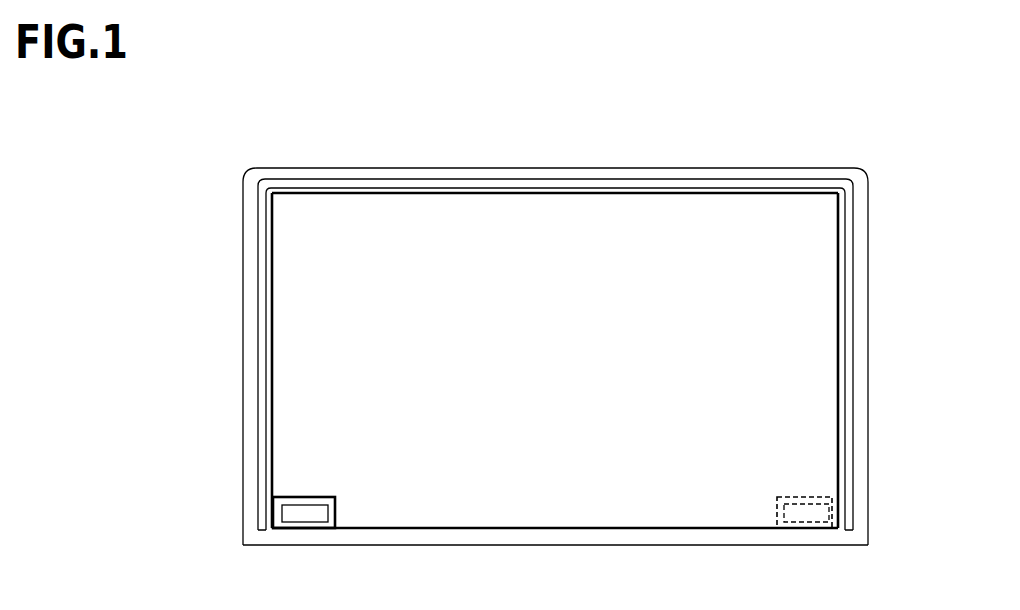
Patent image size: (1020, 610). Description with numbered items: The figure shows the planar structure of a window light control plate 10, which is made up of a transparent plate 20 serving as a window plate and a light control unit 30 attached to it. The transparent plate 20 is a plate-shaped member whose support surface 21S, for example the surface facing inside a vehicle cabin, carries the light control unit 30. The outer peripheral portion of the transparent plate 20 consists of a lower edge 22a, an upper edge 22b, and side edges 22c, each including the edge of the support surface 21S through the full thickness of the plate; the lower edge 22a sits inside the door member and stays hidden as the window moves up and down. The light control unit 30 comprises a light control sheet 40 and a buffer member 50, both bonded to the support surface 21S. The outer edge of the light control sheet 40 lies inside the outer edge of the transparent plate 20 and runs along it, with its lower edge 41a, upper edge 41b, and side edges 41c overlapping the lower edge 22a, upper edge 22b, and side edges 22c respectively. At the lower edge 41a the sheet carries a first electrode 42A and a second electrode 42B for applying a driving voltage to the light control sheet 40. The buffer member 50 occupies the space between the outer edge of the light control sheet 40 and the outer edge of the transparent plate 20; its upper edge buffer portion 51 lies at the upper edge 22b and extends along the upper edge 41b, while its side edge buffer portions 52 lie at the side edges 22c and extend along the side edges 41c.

The window light control plate 10 is at (231, 146).
The transparent plate 20 is at (556, 359).
The support surface 21S is at (862, 345).
The lower edge 22a is at (617, 535).
The upper edge 22b is at (603, 172).
The side edge 22c is at (248, 383).
The light control unit 30 is at (531, 327).
The light control sheet 40 is at (270, 253).
The lower edge 41a is at (485, 517).
The upper edge 41b is at (684, 205).
The side edges 41c is at (285, 420).
The first electrode 42A is at (805, 522).
The second electrode 42B is at (292, 522).
The buffer member 50 is at (257, 216).
The upper edge buffer portion 51 is at (755, 187).
The side edge buffer portions 52 is at (262, 466).